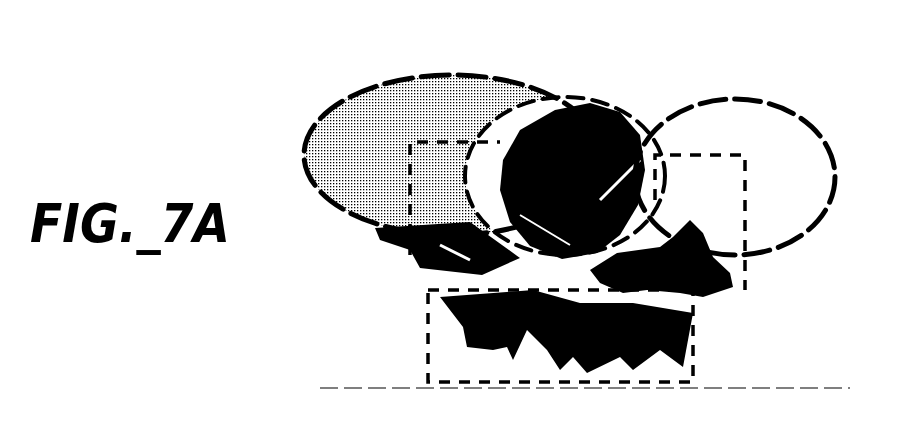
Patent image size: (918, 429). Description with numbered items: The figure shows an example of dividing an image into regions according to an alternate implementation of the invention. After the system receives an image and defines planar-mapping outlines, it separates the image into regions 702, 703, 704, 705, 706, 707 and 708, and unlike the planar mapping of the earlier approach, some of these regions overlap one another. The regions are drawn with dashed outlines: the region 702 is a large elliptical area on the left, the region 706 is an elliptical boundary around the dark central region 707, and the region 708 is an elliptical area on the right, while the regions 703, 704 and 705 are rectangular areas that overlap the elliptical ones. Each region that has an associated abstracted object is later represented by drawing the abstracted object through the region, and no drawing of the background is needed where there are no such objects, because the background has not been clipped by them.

The region 702 is at (389, 83).
The region 703 is at (410, 252).
The region 704 is at (693, 360).
The region 705 is at (743, 277).
The region 706 is at (540, 257).
The region 707 is at (603, 103).
The region 708 is at (757, 107).